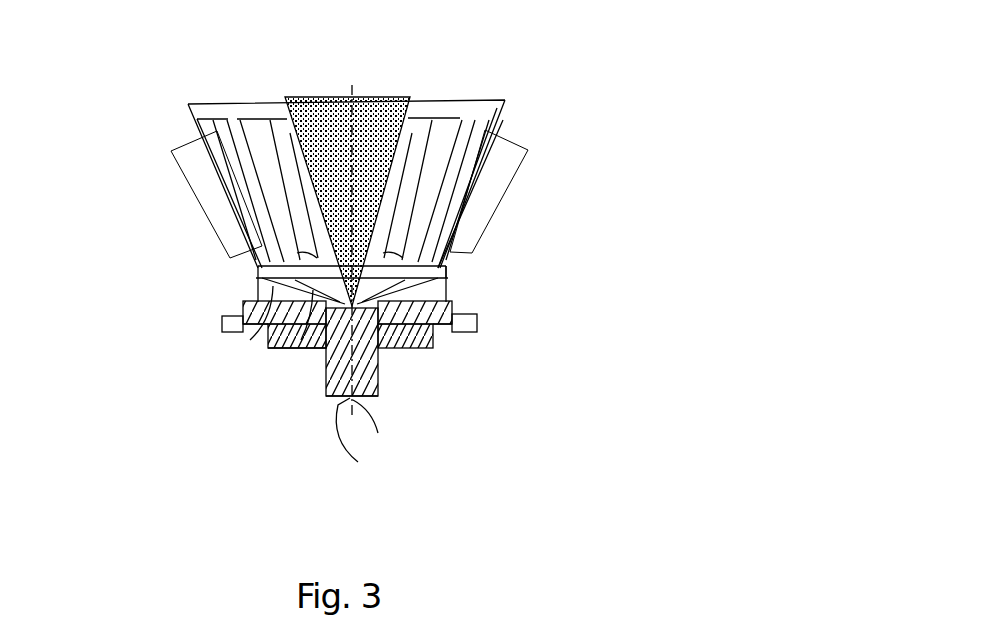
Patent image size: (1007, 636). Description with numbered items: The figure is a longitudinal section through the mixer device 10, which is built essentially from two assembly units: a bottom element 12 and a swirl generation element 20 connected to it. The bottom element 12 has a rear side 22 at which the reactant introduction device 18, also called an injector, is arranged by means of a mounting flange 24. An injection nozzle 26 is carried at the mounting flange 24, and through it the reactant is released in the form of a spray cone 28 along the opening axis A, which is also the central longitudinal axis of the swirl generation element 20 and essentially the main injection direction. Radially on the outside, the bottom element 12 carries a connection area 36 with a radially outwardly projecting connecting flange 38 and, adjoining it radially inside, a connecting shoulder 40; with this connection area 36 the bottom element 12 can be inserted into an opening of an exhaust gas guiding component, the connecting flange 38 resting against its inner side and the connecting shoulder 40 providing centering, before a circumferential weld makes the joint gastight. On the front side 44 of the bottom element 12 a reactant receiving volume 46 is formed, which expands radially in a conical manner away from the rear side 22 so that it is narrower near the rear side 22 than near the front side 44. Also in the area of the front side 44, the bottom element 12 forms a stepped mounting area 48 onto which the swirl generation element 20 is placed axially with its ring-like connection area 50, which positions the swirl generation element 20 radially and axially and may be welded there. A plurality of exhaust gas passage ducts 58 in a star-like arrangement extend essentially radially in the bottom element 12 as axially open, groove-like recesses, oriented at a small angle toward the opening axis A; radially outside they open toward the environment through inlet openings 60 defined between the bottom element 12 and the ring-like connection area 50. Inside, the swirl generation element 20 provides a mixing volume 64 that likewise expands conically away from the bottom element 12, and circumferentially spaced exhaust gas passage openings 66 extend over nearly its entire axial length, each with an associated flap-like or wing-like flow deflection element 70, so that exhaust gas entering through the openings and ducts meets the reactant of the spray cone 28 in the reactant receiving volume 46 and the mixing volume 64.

The mixer device 10 is at (633, 60).
The bottom element 12 is at (567, 222).
The reactant introduction device 18 is at (267, 450).
The swirl generation element 20 is at (188, 106).
The rear side 22 is at (190, 447).
The mounting flange 24 is at (478, 390).
The injection nozzle 26 is at (376, 460).
The spray cone 28 is at (378, 112).
The connection area 36 is at (570, 340).
The connecting flange 38 is at (478, 322).
The connecting shoulder 40 is at (494, 373).
The front side 44 is at (560, 148).
The reactant receiving volume 46 is at (528, 72).
The mounting area 48 is at (268, 328).
The ring-like connection area 50 is at (253, 282).
The exhaust gas passage ducts 58 is at (310, 322).
The inlet openings 60 is at (255, 293).
The mixing volume 64 is at (291, 152).
The exhaust gas passage openings 66 is at (253, 137).
The flow deflection element 70 is at (187, 180).
The opening axis A is at (397, 271).